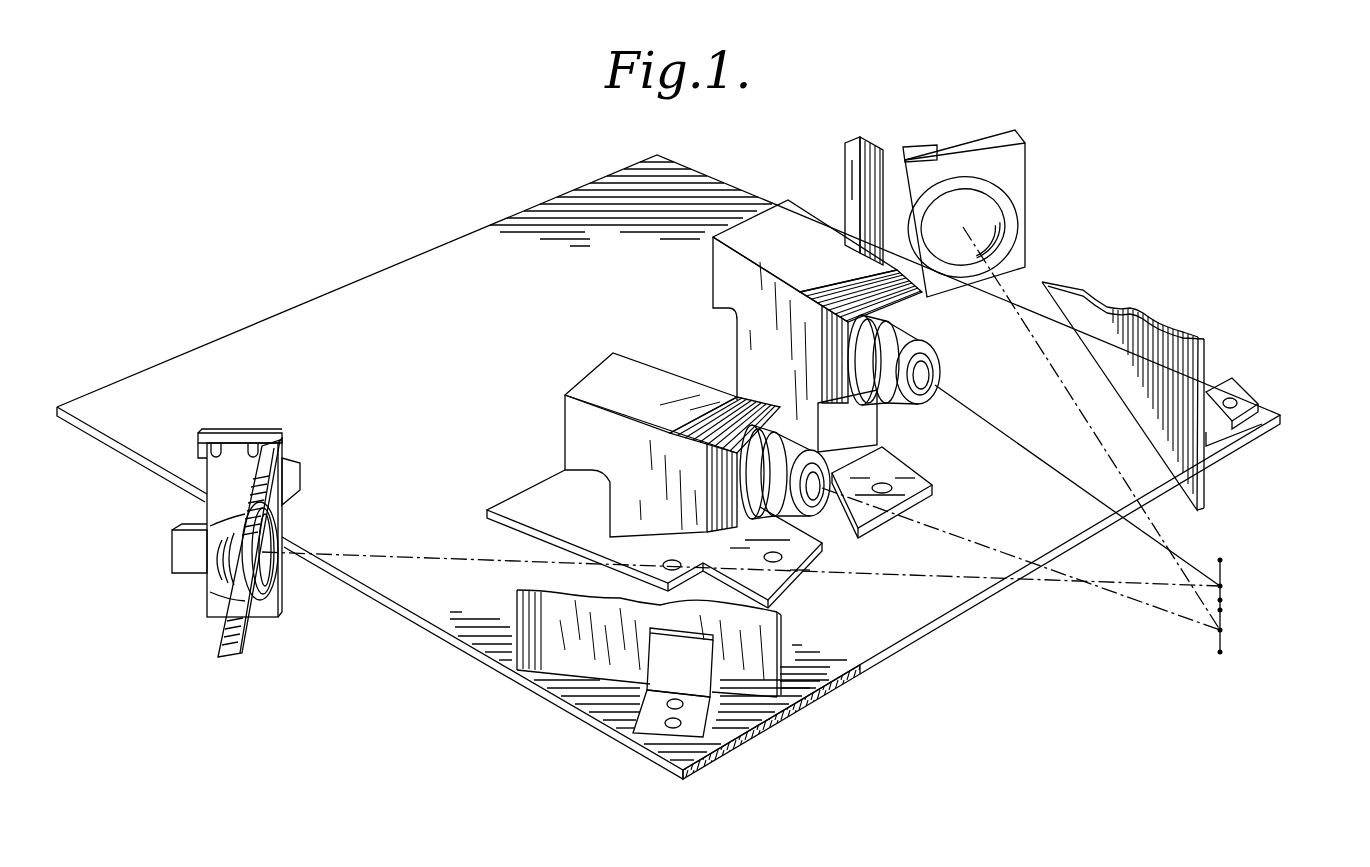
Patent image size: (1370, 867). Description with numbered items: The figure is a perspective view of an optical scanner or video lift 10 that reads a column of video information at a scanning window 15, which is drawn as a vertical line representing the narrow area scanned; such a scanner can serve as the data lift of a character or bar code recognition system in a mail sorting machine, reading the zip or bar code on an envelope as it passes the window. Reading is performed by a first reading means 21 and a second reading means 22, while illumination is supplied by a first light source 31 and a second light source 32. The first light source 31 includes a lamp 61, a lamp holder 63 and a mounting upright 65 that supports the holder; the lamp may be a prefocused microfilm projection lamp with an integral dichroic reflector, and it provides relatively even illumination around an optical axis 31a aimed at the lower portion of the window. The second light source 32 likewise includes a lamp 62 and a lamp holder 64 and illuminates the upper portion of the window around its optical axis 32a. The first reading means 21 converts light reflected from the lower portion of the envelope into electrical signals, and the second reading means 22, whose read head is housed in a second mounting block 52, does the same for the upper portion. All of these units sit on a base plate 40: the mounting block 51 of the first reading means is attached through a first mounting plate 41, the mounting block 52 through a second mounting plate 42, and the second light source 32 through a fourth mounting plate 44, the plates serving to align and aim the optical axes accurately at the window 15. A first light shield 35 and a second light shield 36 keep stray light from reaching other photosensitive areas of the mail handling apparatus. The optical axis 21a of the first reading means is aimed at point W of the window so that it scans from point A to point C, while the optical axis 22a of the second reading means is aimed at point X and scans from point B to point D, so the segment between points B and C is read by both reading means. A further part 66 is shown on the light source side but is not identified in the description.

The optical scanner or video lift 10 is at (1024, 720).
The scanning window 15 is at (1218, 648).
The first reading means 21 is at (621, 480).
The optical axis of the first reading means 21a is at (1008, 522).
The second reading means 22 is at (758, 369).
The optical axis of the second reading means 22a is at (1002, 440).
The first light source 31 is at (948, 198).
The optical axis of the first light source 31a is at (1046, 352).
The second light source 32 is at (233, 594).
The optical axis of the second light source 32a is at (945, 578).
The first light shield 35 is at (1206, 363).
The second light shield 36 is at (575, 675).
The base plate 40 is at (437, 630).
The first mounting plate 41 is at (520, 514).
The second mounting plate 42 is at (897, 473).
The fourth mounting plate 44 is at (300, 480).
The first mounting block 51 is at (598, 470).
The second mounting block 52 is at (735, 318).
The lamp 61 is at (1005, 229).
The lamp 62 is at (213, 557).
The lamp holder 63 is at (988, 147).
The lamp holder 64 is at (250, 635).
The mounting upright 65 is at (845, 172).
The mounting plate of light source 66 is at (285, 600).